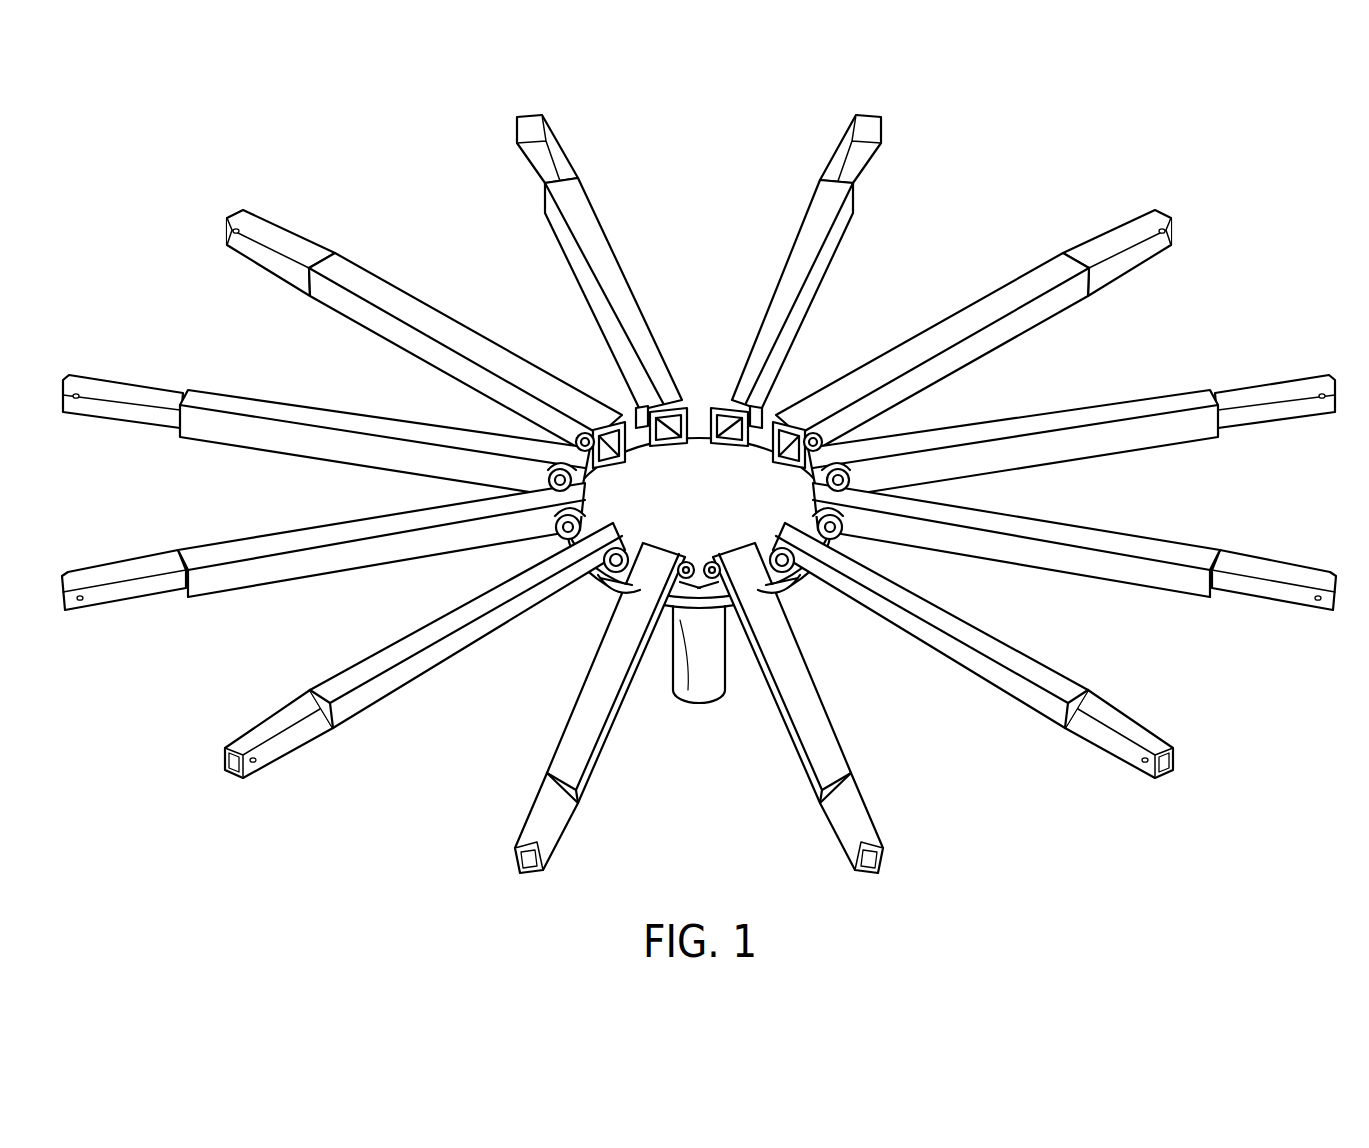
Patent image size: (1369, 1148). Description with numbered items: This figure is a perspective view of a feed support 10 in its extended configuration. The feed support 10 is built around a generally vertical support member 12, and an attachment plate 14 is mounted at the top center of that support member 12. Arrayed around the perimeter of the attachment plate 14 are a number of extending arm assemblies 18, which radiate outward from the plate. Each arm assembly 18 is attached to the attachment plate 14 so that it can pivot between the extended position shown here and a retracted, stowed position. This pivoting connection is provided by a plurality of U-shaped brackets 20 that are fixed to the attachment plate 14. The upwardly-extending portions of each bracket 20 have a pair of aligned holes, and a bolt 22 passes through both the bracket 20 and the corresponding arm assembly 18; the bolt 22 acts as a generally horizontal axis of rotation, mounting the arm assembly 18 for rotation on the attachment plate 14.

The feed support 10 is at (768, 112).
The support member 12 is at (688, 702).
The attachment plate 14 is at (700, 609).
The arm assembly 18 is at (388, 270).
The U-shaped bracket 20 is at (638, 412).
The bolt 22 is at (583, 433).